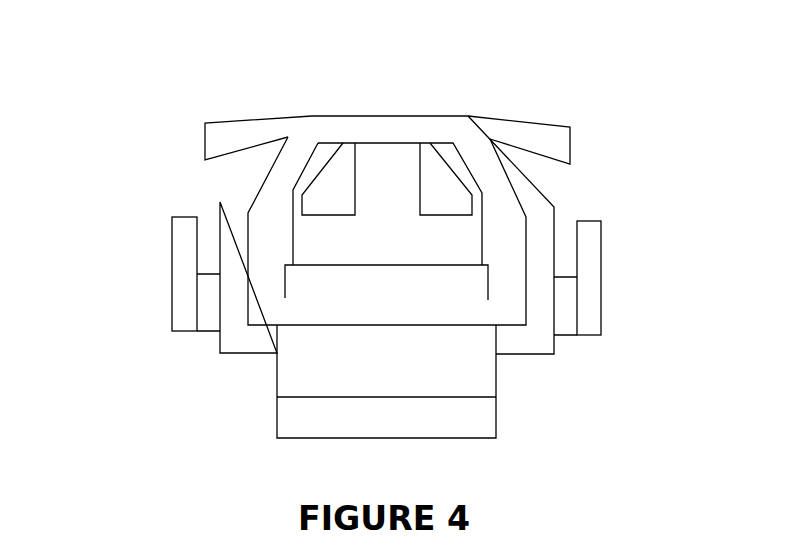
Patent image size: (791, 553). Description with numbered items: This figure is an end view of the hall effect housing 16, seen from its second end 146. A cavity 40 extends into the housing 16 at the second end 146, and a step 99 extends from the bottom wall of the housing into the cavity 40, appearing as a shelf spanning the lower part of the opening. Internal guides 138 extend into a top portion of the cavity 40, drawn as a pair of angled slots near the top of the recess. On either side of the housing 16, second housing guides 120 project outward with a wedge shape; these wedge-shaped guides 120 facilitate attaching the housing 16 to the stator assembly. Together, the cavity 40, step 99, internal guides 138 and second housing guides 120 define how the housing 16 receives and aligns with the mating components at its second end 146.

The housing 16 is at (375, 253).
The second housing guides 120 is at (215, 145).
The internal guides 138 is at (342, 188).
The step 99 is at (340, 265).
The cavity 40 is at (415, 302).
The second end 146 is at (537, 400).